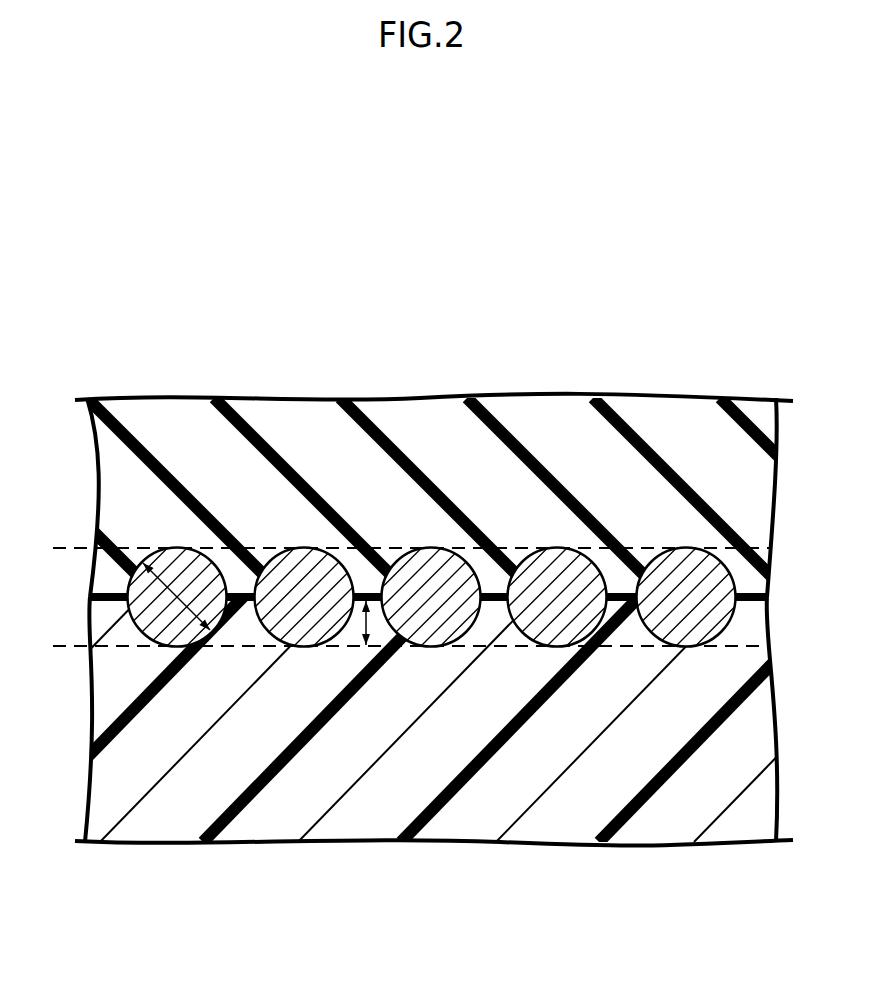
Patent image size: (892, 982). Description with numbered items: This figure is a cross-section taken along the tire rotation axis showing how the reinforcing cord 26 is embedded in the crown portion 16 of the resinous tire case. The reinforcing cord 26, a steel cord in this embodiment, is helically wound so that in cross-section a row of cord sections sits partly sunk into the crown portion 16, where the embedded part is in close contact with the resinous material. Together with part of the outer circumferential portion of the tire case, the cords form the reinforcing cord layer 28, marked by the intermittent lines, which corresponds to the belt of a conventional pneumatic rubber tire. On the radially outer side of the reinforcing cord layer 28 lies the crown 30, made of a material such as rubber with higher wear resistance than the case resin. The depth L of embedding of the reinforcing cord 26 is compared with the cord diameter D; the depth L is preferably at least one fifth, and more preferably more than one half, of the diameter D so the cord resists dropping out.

The crown portion 16 is at (546, 823).
The reinforcing cord 26 is at (152, 556).
The reinforcing cord layer 28 is at (385, 540).
The crown 30 is at (658, 415).
The diameter of the reinforcing cord D is at (130, 624).
The depth of embedding L is at (362, 622).